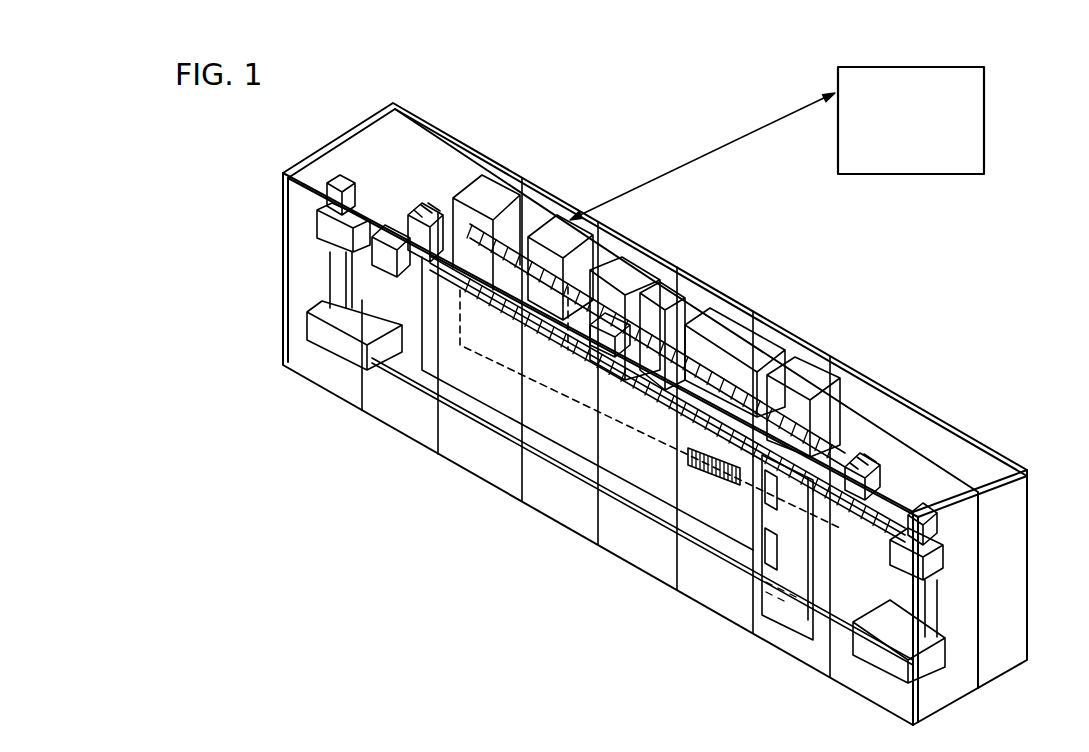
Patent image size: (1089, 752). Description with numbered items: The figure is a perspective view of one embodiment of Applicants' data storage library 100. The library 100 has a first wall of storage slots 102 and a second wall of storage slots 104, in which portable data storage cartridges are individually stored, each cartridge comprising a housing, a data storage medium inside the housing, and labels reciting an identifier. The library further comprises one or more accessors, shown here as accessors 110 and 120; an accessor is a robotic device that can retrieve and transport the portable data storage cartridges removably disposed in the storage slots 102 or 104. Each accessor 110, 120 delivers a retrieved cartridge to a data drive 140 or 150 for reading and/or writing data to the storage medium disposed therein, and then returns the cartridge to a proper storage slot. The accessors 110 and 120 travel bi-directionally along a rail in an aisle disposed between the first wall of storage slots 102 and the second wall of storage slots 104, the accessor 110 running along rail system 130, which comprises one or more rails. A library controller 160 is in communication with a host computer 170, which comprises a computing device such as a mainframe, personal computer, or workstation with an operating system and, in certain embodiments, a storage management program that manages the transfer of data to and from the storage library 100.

The data storage library 100 is at (590, 608).
The first wall of storage slots 102 is at (505, 236).
The second wall of storage slots 104 is at (467, 383).
The accessor 110 is at (323, 228).
The accessor 120 is at (935, 557).
The rail system 130 is at (548, 462).
The data drive 140 is at (632, 262).
The data drive 150 is at (672, 292).
The library controller 160 is at (557, 225).
The host computer 170 is at (777, 143).